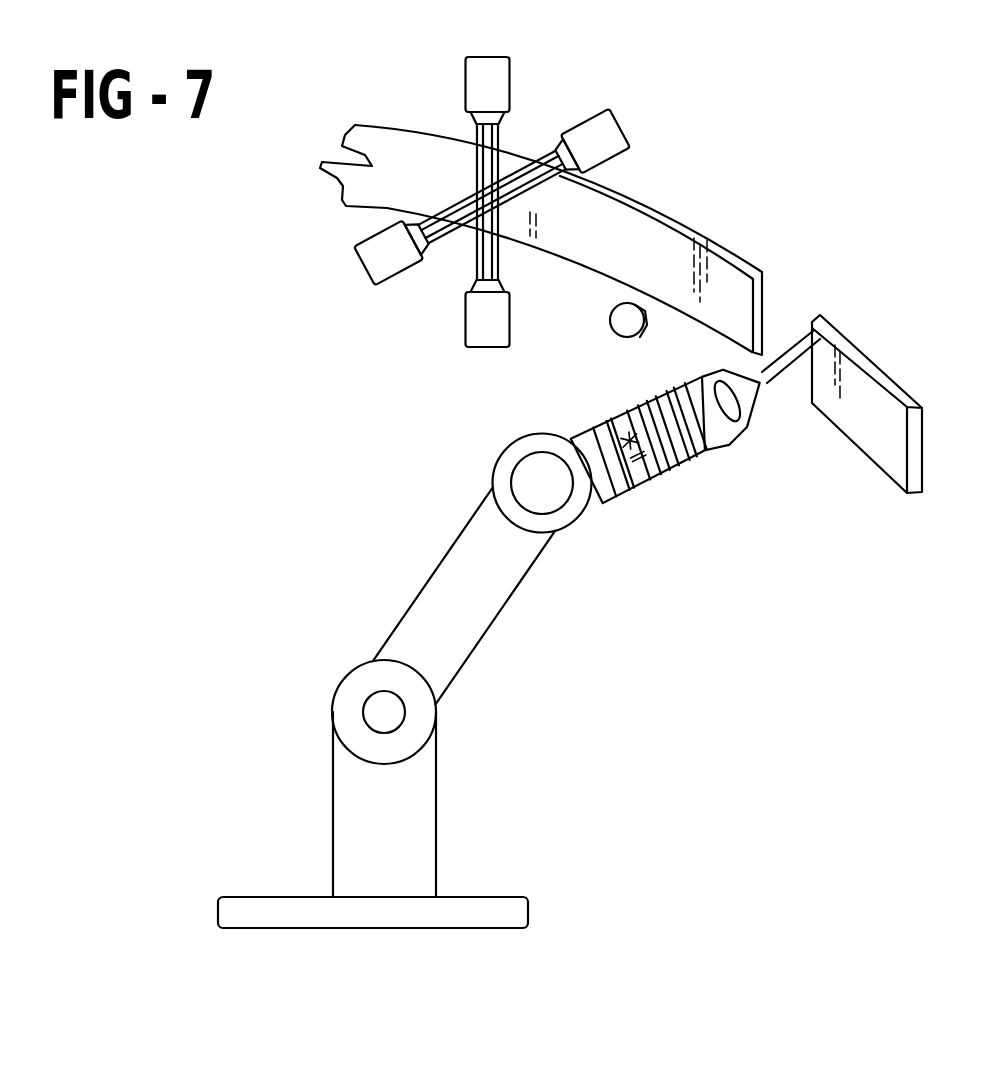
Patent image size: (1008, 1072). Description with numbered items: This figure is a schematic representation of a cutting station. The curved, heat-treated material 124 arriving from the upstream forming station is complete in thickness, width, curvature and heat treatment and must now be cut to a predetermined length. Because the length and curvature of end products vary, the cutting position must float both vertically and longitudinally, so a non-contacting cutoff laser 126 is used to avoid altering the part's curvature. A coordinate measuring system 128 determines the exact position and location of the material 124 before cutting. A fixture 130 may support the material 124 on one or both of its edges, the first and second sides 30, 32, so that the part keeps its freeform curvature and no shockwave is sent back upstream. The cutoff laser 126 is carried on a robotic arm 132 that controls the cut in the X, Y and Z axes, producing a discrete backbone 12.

The backbone 12 is at (872, 410).
The first side 30 is at (743, 262).
The second side 32 is at (700, 332).
The material 124 is at (635, 238).
The cutoff laser 126 is at (723, 461).
The coordinate measuring system 128 is at (425, 112).
The fixture 130 is at (610, 323).
The robotic arm 132 is at (489, 690).